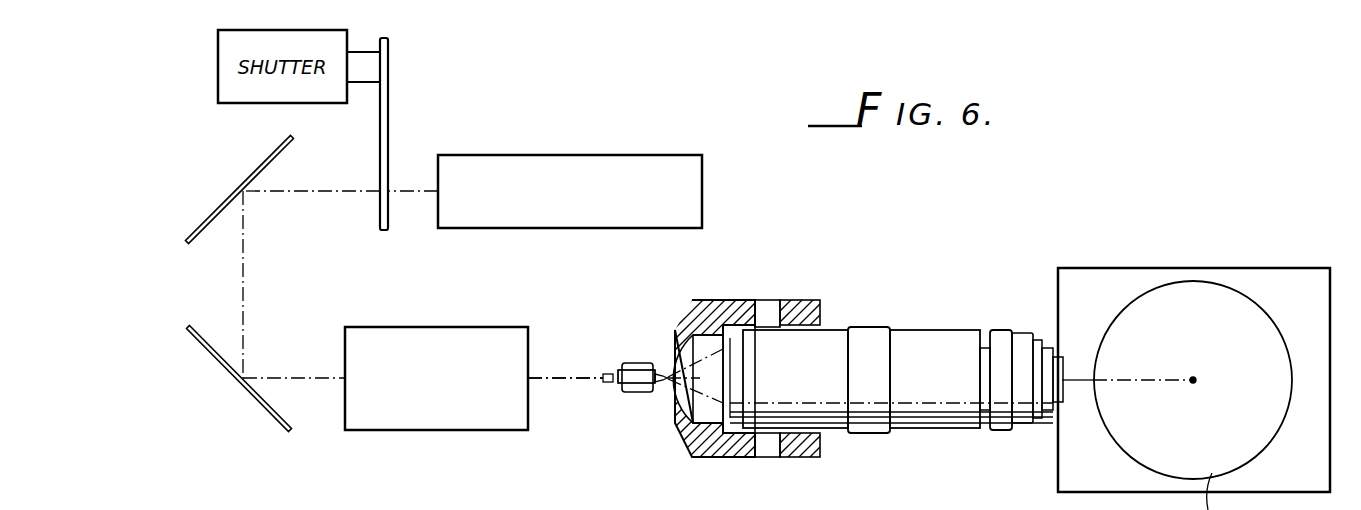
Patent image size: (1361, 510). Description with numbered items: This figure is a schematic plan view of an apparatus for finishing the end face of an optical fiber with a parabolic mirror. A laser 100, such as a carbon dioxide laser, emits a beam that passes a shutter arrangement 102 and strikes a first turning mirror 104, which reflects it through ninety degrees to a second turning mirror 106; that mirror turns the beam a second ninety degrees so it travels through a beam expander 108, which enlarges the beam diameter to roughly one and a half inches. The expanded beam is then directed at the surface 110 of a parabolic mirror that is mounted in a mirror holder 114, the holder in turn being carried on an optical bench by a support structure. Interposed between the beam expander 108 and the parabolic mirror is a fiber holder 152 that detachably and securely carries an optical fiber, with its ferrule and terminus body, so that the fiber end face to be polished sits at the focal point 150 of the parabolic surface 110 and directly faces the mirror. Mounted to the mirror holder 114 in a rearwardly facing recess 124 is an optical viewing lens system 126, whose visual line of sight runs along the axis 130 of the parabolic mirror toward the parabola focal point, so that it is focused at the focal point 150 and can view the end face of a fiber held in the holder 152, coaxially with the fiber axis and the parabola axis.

The laser 100 is at (585, 155).
The shutter arrangement 102 is at (392, 115).
The first turning mirror 104 is at (216, 214).
The second turning mirror 106 is at (214, 360).
The beam expander 108 is at (436, 362).
The surface of parabolic mirror 110 is at (673, 346).
The mirror holder 114 is at (712, 300).
The rearwardly facing recess 124 is at (739, 326).
The optical viewing lens system 126 is at (913, 303).
The axis of the parabolic mirror 130 is at (579, 372).
The focal point 150 is at (661, 367).
The fiber holder 152 is at (631, 405).